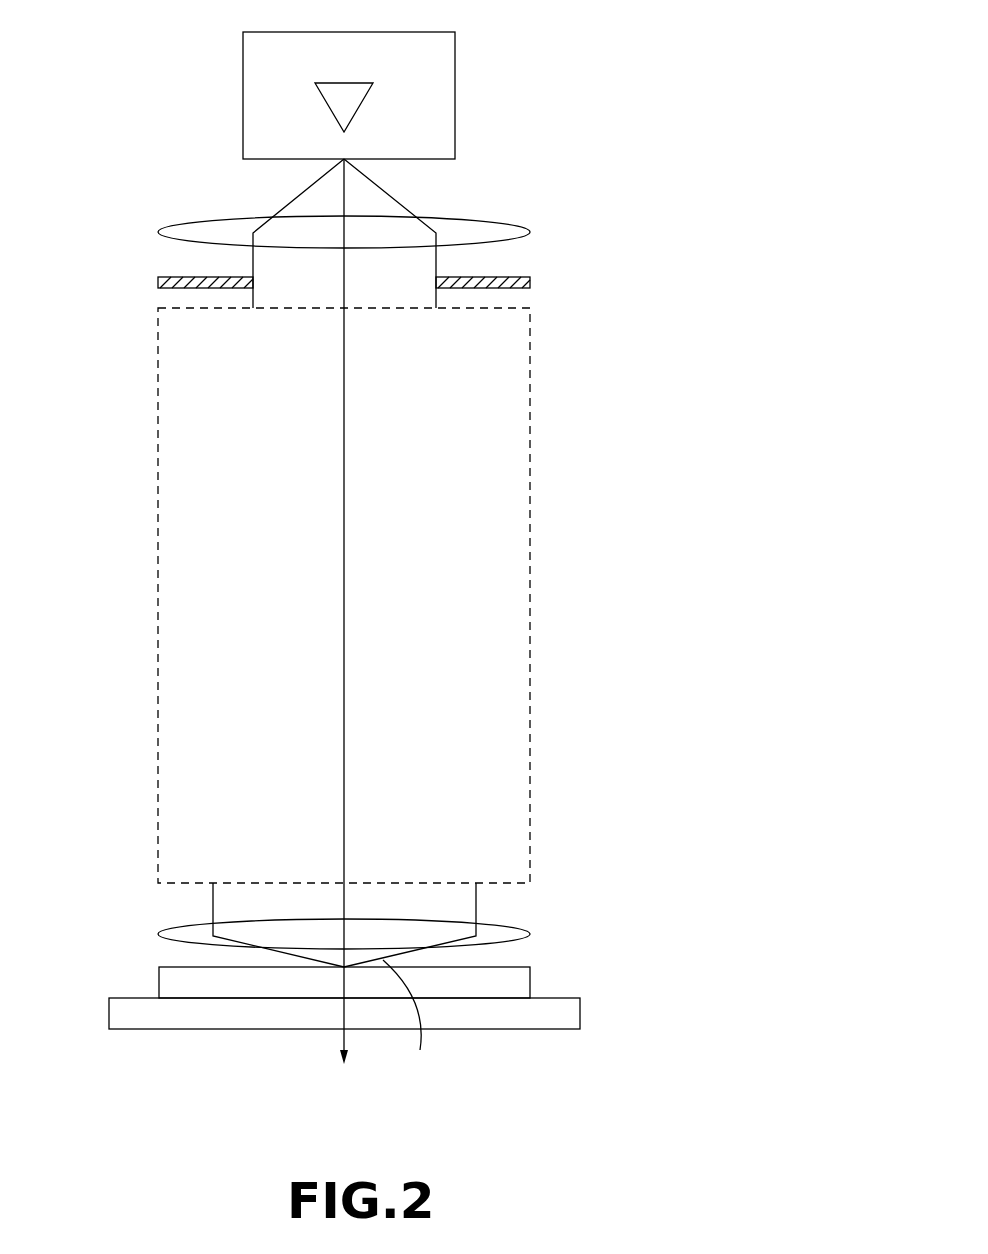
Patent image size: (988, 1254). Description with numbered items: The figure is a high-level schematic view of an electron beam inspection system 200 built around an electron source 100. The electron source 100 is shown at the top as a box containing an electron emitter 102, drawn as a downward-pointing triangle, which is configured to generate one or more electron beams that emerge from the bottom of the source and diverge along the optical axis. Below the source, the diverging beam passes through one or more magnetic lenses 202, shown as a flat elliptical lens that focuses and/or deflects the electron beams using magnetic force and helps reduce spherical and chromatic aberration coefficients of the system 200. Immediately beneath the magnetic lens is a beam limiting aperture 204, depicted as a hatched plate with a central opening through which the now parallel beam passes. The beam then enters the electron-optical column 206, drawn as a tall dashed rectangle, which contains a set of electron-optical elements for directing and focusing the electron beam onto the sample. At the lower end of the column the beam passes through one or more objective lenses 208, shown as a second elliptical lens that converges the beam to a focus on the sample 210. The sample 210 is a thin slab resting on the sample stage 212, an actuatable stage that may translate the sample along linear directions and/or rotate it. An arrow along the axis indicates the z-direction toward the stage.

The electron beam inspection system 200 is at (130, 42).
The electron source 100 is at (289, 57).
The electron emitter 102 is at (360, 108).
The magnetic lens 202 is at (530, 232).
The beam limiting aperture 204 is at (530, 278).
The electron-optical column 206 is at (530, 582).
The objective lens 208 is at (530, 934).
The sample 210 is at (530, 985).
The sample stage 212 is at (580, 1012).